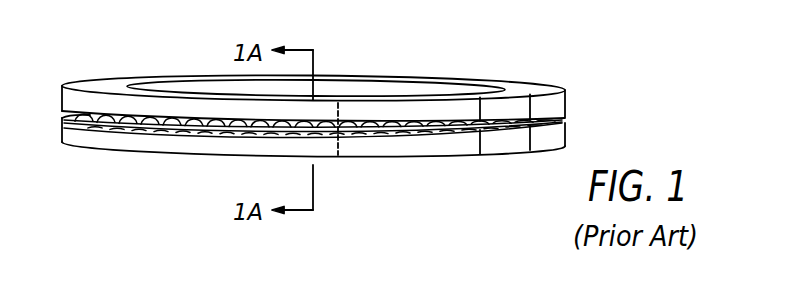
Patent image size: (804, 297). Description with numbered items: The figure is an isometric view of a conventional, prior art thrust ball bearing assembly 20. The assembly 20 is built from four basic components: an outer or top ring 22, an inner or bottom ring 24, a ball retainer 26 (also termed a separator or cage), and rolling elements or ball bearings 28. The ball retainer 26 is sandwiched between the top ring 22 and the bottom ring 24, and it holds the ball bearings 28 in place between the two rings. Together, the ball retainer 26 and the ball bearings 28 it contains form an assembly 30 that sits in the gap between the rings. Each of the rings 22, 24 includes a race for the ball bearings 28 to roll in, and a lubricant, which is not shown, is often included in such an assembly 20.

The thrust ball bearing assembly 20 is at (444, 36).
The top ring 22 is at (538, 89).
The bottom ring 24 is at (503, 143).
The ball retainer 26 is at (105, 122).
The ball bearings 28 is at (188, 124).
The assembly 30 is at (342, 145).